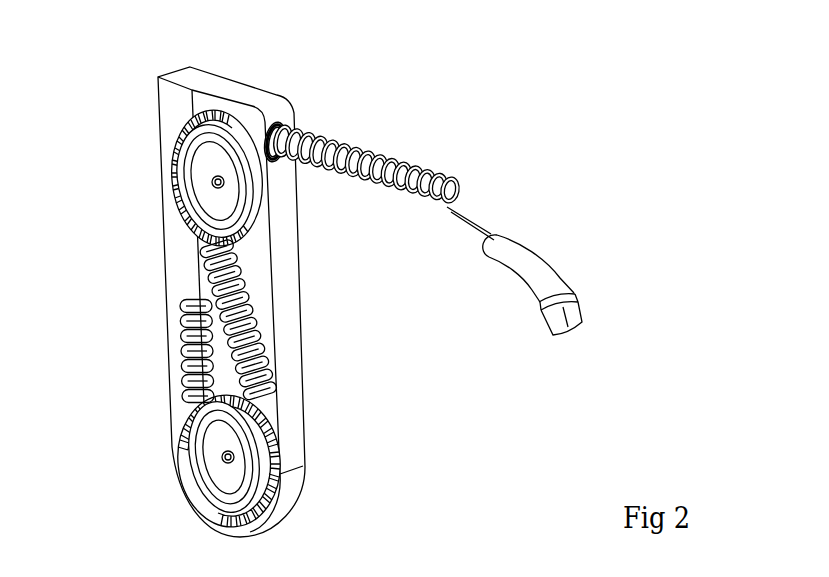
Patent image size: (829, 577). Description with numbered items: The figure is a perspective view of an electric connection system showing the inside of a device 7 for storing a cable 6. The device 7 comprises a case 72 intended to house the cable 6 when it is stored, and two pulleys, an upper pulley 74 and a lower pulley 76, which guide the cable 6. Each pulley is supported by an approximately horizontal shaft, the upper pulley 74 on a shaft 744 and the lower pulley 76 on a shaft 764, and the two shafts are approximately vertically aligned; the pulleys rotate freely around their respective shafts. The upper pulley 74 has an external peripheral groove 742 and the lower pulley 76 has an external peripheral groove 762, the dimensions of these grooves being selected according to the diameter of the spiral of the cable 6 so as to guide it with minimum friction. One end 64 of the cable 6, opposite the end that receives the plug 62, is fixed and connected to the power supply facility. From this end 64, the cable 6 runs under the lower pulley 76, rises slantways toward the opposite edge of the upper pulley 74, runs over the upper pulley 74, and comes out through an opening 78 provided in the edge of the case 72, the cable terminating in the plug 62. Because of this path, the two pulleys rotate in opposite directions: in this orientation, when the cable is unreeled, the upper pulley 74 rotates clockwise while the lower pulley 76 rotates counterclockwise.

The device for storing cable 7 is at (369, 274).
The case 72 is at (287, 310).
The upper pulley 74 is at (214, 178).
The external peripheral groove 742 is at (260, 194).
The shaft 744 is at (214, 186).
The lower pulley 76 is at (236, 460).
The external peripheral groove 762 is at (268, 400).
The shaft 764 is at (226, 460).
The cable 6 is at (243, 293).
The end of cable 64 is at (182, 307).
The opening 78 is at (282, 124).
The plug 62 is at (556, 289).